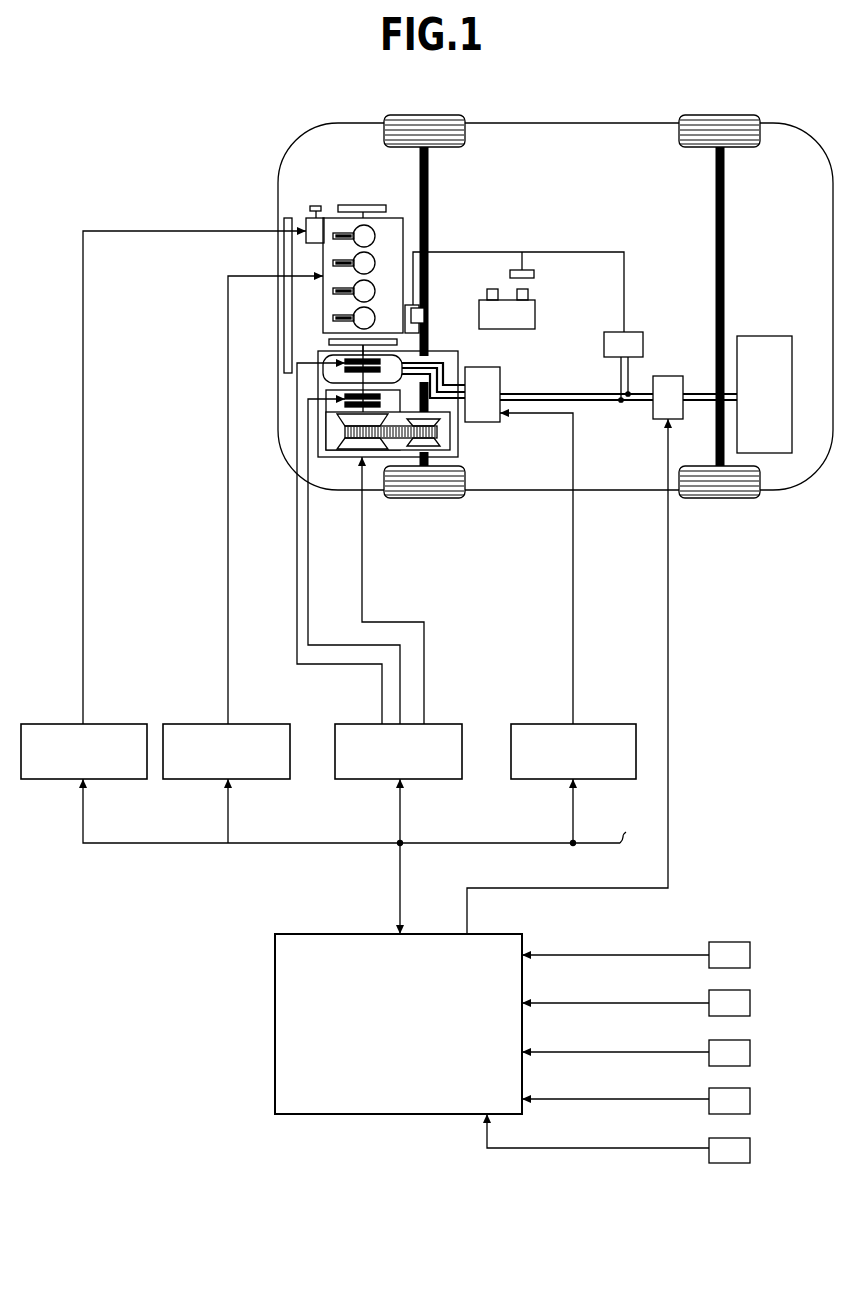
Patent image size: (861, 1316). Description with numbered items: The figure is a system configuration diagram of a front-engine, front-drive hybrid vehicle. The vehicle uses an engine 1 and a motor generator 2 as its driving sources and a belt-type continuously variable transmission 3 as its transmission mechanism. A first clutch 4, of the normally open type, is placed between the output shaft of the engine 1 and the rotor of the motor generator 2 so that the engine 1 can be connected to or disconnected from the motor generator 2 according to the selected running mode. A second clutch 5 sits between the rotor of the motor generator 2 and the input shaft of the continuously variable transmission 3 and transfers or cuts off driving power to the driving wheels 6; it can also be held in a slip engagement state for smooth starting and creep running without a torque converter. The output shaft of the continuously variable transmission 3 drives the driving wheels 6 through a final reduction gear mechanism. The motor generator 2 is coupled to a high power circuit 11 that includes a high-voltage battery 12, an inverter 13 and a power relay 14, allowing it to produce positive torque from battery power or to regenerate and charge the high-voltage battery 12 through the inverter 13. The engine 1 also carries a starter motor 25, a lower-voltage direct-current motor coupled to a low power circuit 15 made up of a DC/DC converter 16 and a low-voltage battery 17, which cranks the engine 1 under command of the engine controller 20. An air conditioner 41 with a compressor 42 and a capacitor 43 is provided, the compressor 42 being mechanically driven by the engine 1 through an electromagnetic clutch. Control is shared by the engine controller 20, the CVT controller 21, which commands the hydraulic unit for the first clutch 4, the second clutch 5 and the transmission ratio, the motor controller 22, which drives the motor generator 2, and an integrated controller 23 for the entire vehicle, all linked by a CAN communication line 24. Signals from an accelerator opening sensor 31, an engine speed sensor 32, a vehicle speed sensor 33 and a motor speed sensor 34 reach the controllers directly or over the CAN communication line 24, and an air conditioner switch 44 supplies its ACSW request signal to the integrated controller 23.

The engine 1 is at (323, 263).
The motor generator 2 is at (338, 370).
The belt-type continuously variable transmission 3 is at (337, 428).
The first clutch 4 is at (340, 360).
The second clutch 5 is at (326, 399).
The driving wheels 6 is at (415, 114).
The high power circuit 11 is at (632, 456).
The high-voltage battery 12 is at (760, 336).
The inverter 13 is at (483, 422).
The power relay 14 is at (668, 376).
The low power circuit 15 is at (600, 227).
The DC/DC converter 16 is at (625, 332).
The low-voltage battery 17 is at (536, 314).
The engine controller 20 is at (250, 724).
The CVT controller 21 is at (437, 724).
The motor controller 22 is at (612, 724).
The integrated controller 23 is at (323, 934).
The CAN communication line 24 is at (441, 845).
The starter motor 25 is at (426, 330).
The accelerator opening sensor 31 is at (751, 956).
The engine speed sensor 32 is at (751, 1053).
The vehicle speed sensor 33 is at (751, 1004).
The motor speed sensor 34 is at (751, 1100).
The air conditioner 41 is at (104, 724).
The compressor 42 is at (312, 217).
The capacitor 43 is at (284, 304).
The air conditioner switch 44 is at (751, 1151).